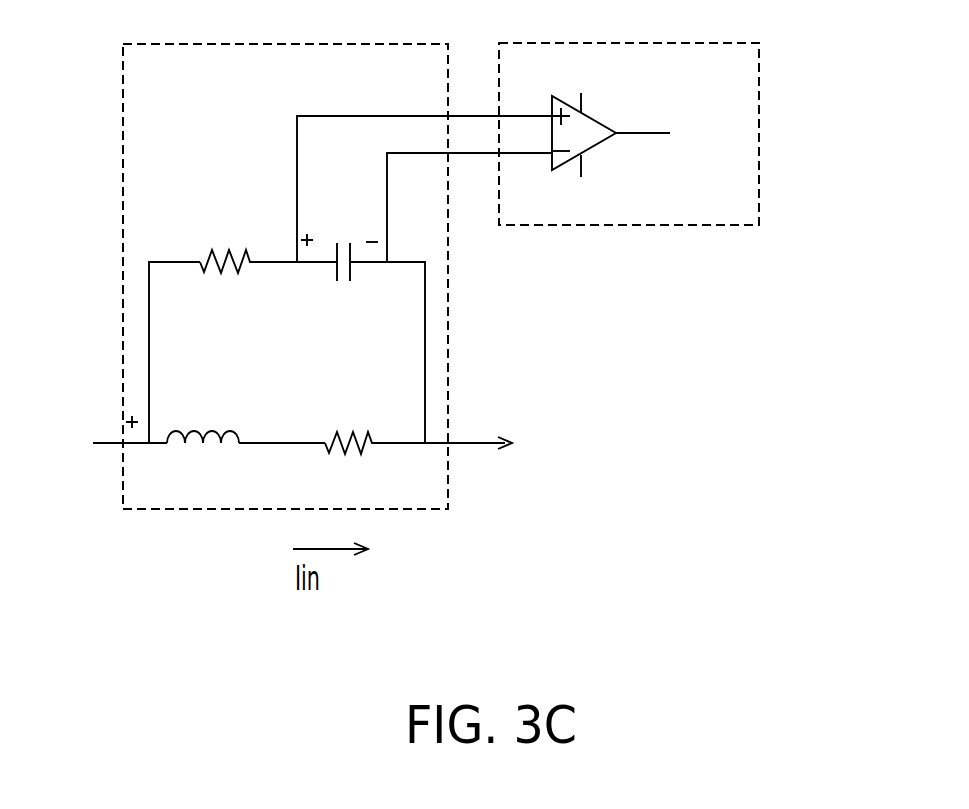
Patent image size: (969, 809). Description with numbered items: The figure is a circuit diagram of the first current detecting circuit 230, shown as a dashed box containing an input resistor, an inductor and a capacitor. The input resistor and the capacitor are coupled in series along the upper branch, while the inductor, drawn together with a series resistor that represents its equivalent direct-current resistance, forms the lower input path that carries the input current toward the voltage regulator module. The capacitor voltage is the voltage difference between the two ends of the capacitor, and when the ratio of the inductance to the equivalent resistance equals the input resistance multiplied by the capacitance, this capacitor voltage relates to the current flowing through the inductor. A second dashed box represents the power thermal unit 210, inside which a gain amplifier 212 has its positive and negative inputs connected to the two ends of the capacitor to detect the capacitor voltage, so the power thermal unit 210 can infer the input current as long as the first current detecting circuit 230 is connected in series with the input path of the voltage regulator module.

The first current detecting circuit 230 is at (123, 288).
The gain amplifier 212 is at (583, 117).
The power thermal unit 210 is at (668, 134).